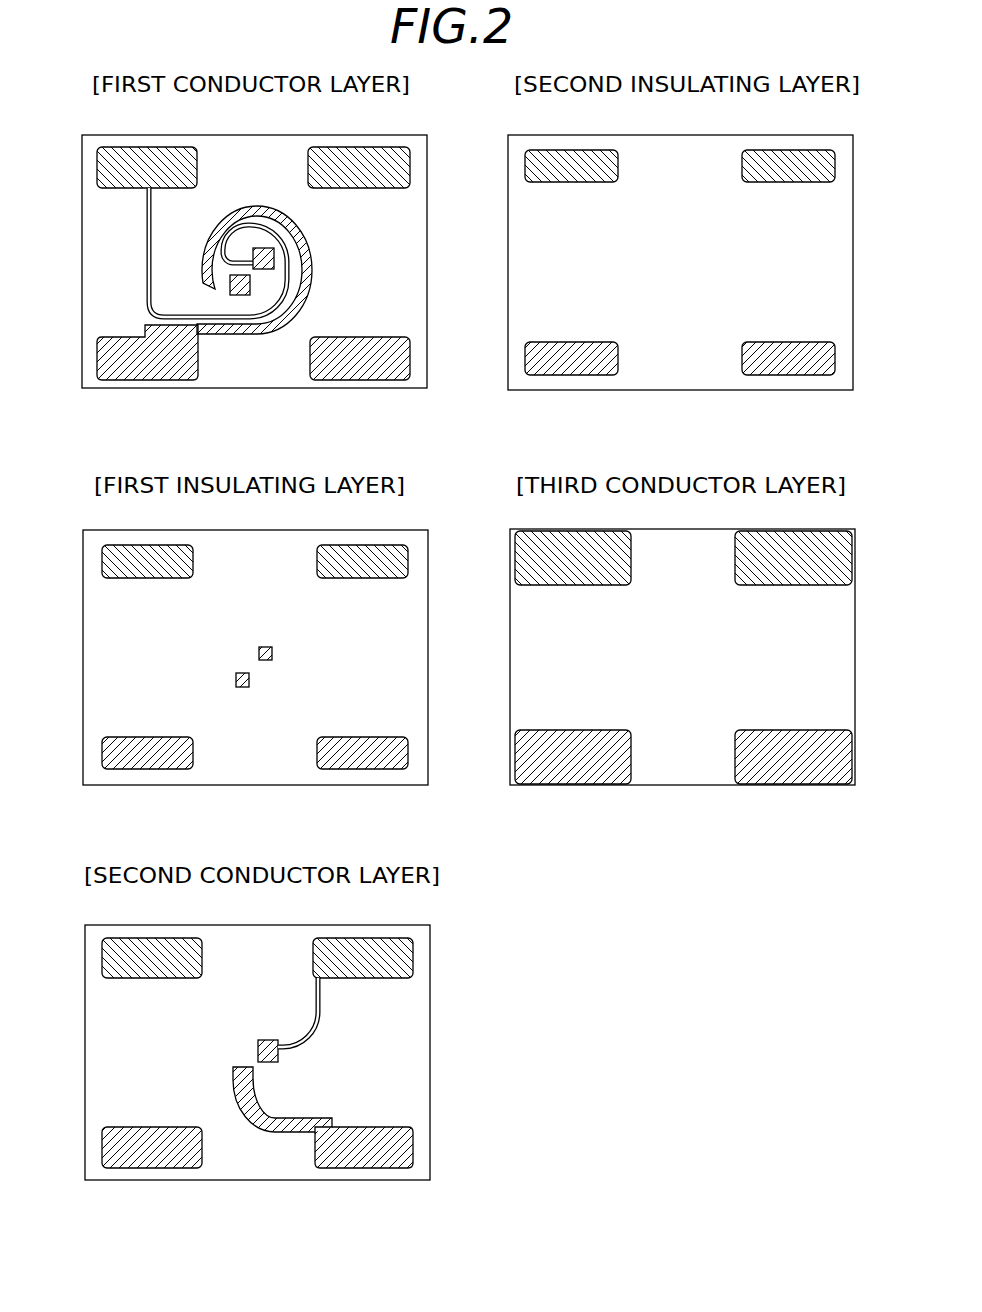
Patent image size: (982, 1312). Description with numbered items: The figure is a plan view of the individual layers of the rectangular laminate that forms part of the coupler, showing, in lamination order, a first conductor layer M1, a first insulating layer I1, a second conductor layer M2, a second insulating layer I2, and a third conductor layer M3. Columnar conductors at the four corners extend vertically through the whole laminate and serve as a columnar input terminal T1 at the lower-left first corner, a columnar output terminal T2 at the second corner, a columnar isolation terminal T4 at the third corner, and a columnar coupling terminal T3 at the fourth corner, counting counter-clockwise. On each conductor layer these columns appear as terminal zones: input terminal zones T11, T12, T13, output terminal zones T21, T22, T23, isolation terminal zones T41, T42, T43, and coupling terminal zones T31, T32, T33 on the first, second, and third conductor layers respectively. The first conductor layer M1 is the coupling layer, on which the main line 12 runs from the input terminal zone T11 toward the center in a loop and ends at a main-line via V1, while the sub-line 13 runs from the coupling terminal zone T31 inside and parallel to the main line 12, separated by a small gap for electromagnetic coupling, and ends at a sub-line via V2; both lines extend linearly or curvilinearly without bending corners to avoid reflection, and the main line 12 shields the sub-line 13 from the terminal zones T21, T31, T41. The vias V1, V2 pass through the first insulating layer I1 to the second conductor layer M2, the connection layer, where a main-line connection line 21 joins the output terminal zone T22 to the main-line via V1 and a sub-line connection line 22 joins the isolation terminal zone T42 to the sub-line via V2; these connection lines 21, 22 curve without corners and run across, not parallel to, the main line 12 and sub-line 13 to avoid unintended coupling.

The first conductor layer M1 is at (432, 203).
The second conductor layer M2 is at (438, 988).
The third conductor layer M3 is at (505, 700).
The first insulating layer I1 is at (435, 602).
The second insulating layer I2 is at (503, 322).
The main line 12 is at (272, 334).
The sub-line 13 is at (212, 315).
The main-line connection line 21 is at (257, 1128).
The sub-line connection line 22 is at (318, 1015).
The main-line via V1 is at (251, 284).
The sub-line via V2 is at (275, 255).
The columnar input terminal T1 is at (570, 372).
The columnar output terminal T2 is at (795, 375).
The columnar coupling terminal T3 is at (553, 150).
The columnar isolation terminal T4 is at (788, 150).
The input terminal zone T11 is at (139, 378).
The output terminal zone T21 is at (362, 378).
The coupling terminal zone T31 is at (132, 146).
The isolation terminal zone T41 is at (353, 146).
The input terminal zone T12 is at (152, 1168).
The output terminal zone T22 is at (377, 1170).
The coupling terminal zone T32 is at (175, 938).
The isolation terminal zone T42 is at (350, 938).
The input terminal zone T13 is at (570, 775).
The output terminal zone T23 is at (793, 775).
The coupling terminal zone T33 is at (578, 542).
The isolation terminal zone T43 is at (782, 542).